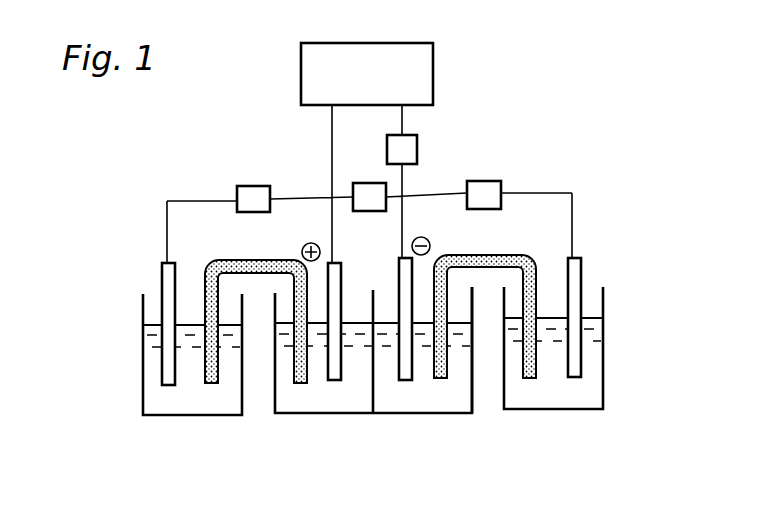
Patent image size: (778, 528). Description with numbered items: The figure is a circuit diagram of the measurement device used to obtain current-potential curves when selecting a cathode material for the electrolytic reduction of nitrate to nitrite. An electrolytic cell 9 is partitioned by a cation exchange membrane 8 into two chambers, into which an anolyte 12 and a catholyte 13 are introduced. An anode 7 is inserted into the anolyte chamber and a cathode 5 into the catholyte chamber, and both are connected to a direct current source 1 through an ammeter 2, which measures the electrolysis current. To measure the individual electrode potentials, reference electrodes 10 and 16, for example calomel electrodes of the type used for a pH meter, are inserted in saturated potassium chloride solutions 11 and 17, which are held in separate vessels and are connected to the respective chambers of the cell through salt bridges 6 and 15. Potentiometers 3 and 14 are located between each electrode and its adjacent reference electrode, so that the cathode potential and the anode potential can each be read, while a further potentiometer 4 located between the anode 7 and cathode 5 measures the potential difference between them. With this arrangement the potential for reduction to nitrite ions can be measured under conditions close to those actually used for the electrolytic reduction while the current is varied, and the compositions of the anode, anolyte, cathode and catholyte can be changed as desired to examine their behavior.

The direct current source 1 is at (434, 62).
The ammeter 2 is at (417, 146).
The potentiometer 3 is at (485, 181).
The potentiometer 4 is at (367, 183).
The cathode 5 is at (397, 268).
The salt bridge 6 is at (490, 257).
The anode 7 is at (341, 266).
The cation exchange membrane 8 is at (374, 396).
The electrolytic cell 9 is at (462, 412).
The reference electrode 10 is at (583, 264).
The saturated potassium chloride solution 11 is at (556, 405).
The anolyte 12 is at (331, 412).
The catholyte 13 is at (430, 407).
The potentiometer 14 is at (255, 186).
The salt bridge 15 is at (262, 265).
The reference electrode 16 is at (178, 270).
The saturated potassium chloride solution 17 is at (197, 410).